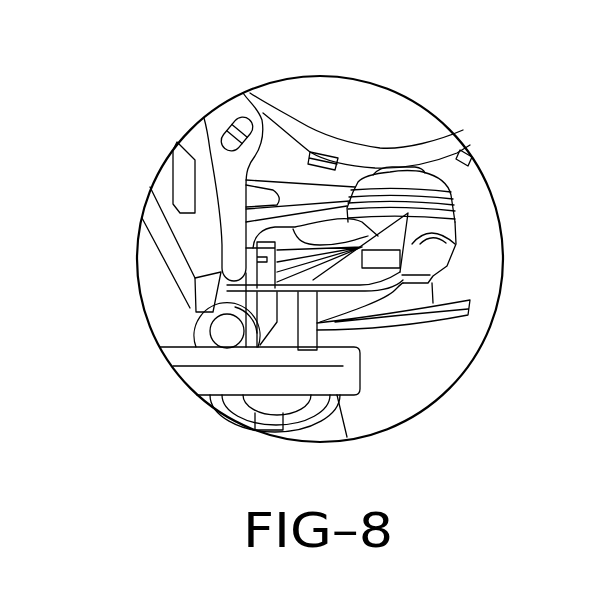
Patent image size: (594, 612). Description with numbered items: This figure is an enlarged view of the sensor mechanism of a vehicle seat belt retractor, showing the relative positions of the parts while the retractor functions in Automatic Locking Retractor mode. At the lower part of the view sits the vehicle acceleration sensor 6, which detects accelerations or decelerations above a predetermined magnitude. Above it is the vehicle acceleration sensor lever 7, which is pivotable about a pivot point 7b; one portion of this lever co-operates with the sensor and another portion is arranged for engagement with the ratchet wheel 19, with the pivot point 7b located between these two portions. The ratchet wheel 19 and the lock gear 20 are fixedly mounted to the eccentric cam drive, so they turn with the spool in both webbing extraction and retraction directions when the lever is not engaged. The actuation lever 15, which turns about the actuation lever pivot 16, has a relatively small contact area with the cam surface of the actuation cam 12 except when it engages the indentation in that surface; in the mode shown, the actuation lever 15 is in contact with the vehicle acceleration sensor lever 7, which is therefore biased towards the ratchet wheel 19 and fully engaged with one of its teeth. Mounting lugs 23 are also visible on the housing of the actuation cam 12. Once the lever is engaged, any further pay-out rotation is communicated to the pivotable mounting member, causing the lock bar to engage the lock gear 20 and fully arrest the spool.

The actuation cam 12 is at (267, 100).
The mounting lugs 23 is at (330, 153).
The actuation lever 15 is at (228, 109).
The actuation lever pivot 16 is at (233, 137).
The ratchet wheel 19 is at (456, 214).
The lock gear 20 is at (412, 242).
The pivot point 7b is at (217, 330).
The vehicle acceleration sensor lever 7 is at (309, 331).
The vehicle acceleration sensor 6 is at (325, 433).